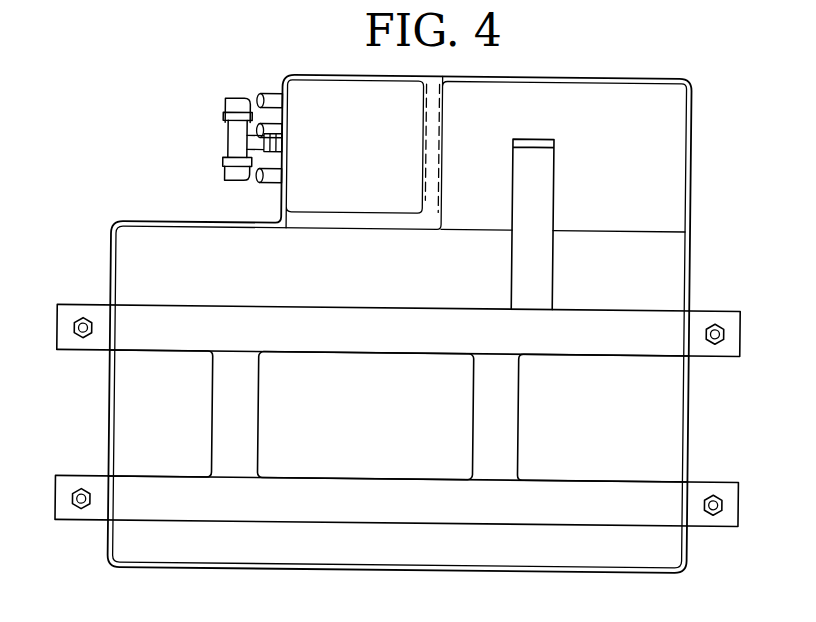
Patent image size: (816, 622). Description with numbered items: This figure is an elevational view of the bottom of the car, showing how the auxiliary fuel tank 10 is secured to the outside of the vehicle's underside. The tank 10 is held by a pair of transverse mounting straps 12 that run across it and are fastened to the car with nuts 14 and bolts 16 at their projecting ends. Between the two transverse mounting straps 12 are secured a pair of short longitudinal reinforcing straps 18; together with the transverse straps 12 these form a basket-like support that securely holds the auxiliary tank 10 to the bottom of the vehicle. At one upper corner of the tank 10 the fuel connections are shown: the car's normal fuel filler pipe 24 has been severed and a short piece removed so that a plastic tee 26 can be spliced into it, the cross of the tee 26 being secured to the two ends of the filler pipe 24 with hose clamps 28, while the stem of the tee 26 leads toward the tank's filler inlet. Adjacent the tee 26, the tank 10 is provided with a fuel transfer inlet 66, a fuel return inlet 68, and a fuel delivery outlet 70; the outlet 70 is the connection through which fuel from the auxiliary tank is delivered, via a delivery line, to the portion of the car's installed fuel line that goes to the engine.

The auxiliary fuel tank 10 is at (670, 164).
The transverse mounting straps 12 is at (327, 319).
The nuts 14 is at (82, 318).
The bolts 16 is at (75, 329).
The longitudinal reinforcing straps 18 is at (251, 407).
The fuel filler pipe 24 is at (231, 104).
The plastic tee 26 is at (226, 135).
The hose clamps 28 is at (223, 114).
The fuel transfer inlet 66 is at (275, 131).
The fuel return inlet 68 is at (268, 96).
The fuel delivery outlet 70 is at (271, 174).